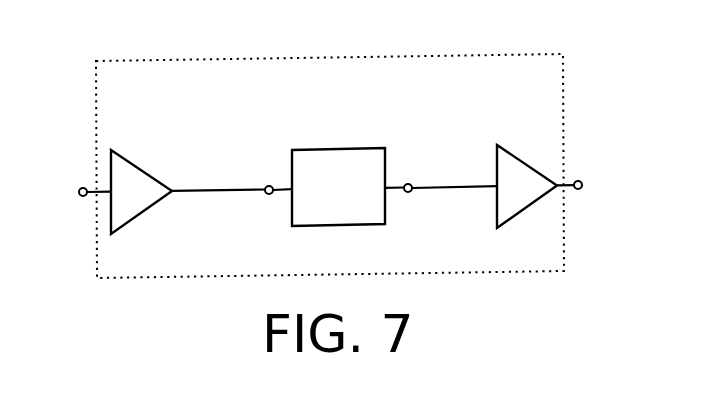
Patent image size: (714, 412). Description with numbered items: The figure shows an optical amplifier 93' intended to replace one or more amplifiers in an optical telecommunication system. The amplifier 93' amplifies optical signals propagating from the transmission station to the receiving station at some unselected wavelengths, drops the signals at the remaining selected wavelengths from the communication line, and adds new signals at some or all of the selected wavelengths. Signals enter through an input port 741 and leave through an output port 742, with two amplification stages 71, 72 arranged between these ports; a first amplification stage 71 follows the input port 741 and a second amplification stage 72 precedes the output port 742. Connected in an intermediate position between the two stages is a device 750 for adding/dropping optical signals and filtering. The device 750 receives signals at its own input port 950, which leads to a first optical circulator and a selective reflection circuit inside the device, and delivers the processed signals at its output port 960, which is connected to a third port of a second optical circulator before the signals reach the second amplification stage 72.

The optical amplifier 93' is at (356, 166).
The input port 741 is at (79, 192).
The amplification stage 71 is at (132, 207).
The input port 950 is at (268, 197).
The device for adding/dropping optical signals and filtering 750 is at (357, 159).
The output port 960 is at (407, 193).
The amplification stage 72 is at (512, 205).
The output port 742 is at (585, 175).